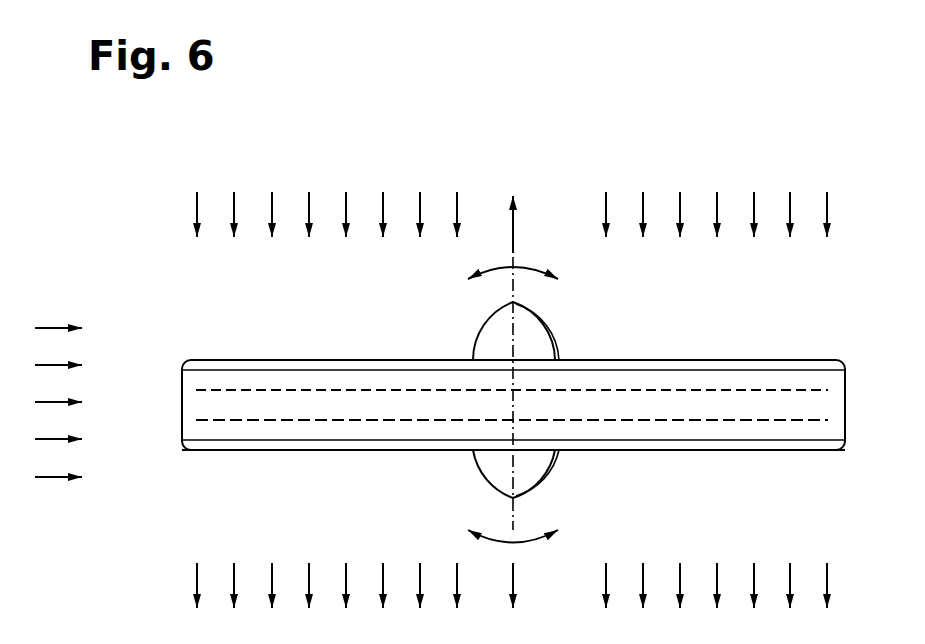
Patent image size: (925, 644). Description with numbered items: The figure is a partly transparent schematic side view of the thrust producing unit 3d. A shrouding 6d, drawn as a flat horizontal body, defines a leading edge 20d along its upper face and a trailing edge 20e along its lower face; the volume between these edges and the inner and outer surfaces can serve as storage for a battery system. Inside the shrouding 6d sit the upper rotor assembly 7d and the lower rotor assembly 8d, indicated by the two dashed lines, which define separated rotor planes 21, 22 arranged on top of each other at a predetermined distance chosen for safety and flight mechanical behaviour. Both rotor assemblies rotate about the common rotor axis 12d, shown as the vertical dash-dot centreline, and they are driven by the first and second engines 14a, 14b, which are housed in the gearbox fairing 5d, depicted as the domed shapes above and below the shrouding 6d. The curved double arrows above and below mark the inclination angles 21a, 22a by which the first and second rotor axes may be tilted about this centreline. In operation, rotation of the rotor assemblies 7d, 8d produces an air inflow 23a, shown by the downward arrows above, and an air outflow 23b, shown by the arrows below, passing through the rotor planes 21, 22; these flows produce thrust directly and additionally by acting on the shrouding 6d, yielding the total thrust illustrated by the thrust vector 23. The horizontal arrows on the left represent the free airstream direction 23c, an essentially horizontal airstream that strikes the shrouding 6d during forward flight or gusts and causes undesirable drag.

The thrust producing unit 3d is at (214, 352).
The gearbox fairing 5d is at (557, 338).
The shrouding 6d is at (799, 366).
The upper rotor assembly 7d is at (293, 383).
The lower rotor assembly 8d is at (294, 427).
The rotor axis 12d is at (514, 236).
The first engine 14a is at (460, 322).
The second engine 14b is at (463, 492).
The leading edge 20d is at (722, 346).
The trailing edge 20e is at (731, 464).
The rotor plane 21 is at (174, 390).
The rotor plane 22 is at (174, 418).
The inclination angle 21a is at (500, 266).
The inclination angle 22a is at (530, 547).
The thrust vector 23 is at (512, 208).
The air inflow 23a is at (176, 206).
The air outflow 23b is at (176, 578).
The free airstream direction 23c is at (54, 304).